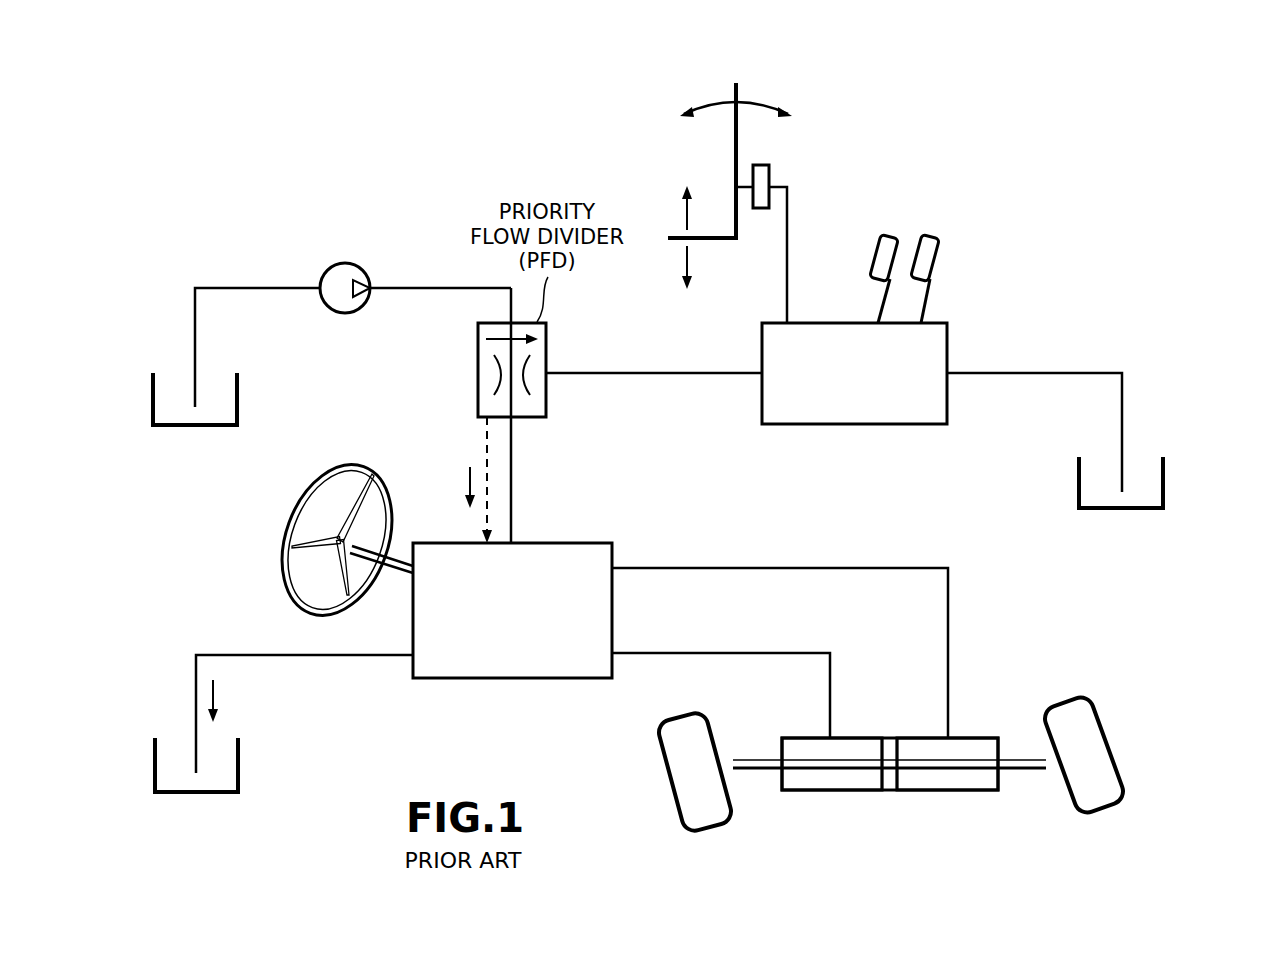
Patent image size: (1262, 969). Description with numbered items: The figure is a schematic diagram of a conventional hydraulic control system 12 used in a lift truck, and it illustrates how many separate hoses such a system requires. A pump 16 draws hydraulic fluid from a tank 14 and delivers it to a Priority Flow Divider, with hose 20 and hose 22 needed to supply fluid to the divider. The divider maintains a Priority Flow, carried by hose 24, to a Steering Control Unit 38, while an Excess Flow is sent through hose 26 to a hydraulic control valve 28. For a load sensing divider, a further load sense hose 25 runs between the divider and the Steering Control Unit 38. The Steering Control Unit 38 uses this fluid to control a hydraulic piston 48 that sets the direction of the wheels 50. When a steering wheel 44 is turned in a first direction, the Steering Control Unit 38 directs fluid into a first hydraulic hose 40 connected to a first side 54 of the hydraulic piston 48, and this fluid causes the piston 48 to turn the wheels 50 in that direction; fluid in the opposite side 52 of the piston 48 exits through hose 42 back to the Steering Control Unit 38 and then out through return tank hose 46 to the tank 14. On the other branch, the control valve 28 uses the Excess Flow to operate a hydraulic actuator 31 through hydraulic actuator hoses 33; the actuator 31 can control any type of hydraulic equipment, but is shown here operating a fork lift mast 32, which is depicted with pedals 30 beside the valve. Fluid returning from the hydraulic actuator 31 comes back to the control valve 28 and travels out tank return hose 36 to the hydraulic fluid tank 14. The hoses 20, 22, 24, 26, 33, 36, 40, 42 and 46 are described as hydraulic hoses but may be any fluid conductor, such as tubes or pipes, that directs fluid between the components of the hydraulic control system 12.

The hydraulic control system 12 is at (352, 130).
The tank 14 is at (238, 398).
The pump 16 is at (345, 263).
The hose 20 is at (253, 288).
The hose 22 is at (436, 290).
The hose 24 is at (512, 457).
The load sense hose 25 is at (486, 443).
The hose 26 is at (650, 374).
The hydraulic control valve 28 is at (855, 425).
The pedals 30 is at (930, 236).
The hydraulic actuator 31 is at (770, 170).
The fork lift mast 32 is at (737, 136).
The hydraulic actuator hoses 33 is at (788, 238).
The hose 36 is at (1038, 372).
The Steering Control Unit 38 is at (513, 680).
The first hydraulic hose 40 is at (729, 567).
The hose 42 is at (729, 652).
The steering wheel 44 is at (293, 510).
The hose 46 is at (240, 655).
The hydraulic piston 48 is at (930, 791).
The wheels 50 is at (1082, 697).
The opposite side 52 is at (808, 737).
The first side 54 is at (972, 737).